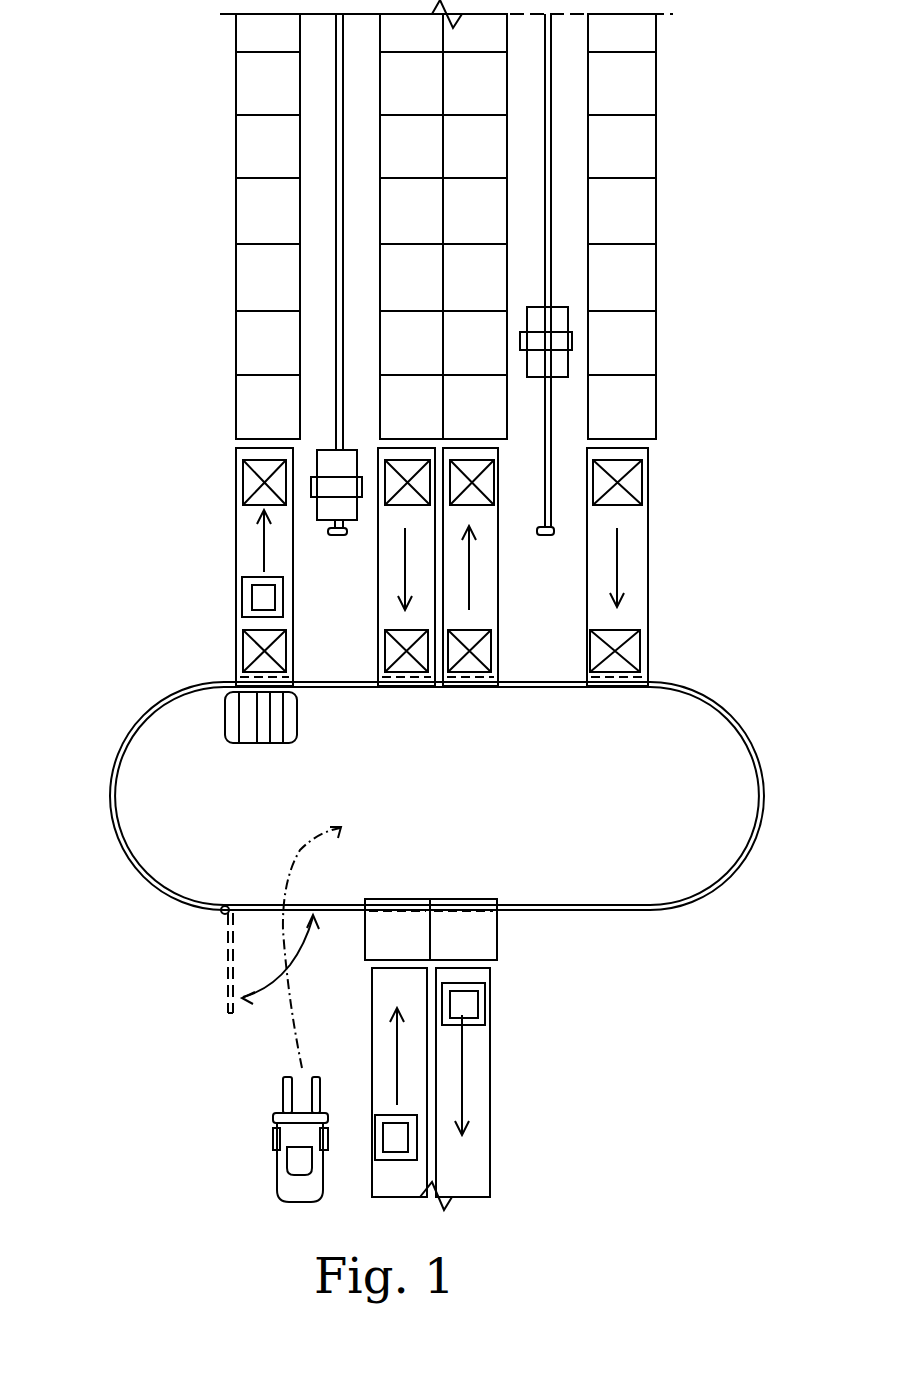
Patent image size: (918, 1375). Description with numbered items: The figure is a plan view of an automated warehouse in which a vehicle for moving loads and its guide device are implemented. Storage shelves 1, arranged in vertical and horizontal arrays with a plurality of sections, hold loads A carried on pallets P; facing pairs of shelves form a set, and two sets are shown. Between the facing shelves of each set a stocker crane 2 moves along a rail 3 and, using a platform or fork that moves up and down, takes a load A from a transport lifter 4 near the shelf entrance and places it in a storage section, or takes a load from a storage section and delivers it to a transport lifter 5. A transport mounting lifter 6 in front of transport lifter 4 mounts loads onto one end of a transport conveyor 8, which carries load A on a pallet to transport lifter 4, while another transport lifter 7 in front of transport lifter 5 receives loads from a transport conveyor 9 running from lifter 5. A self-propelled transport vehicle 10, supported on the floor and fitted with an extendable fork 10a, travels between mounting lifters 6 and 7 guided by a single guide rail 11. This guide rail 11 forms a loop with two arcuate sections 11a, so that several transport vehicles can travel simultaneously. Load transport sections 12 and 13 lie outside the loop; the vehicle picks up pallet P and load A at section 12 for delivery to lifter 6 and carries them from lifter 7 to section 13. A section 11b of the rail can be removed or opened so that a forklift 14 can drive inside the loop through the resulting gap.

The storage shelves 1 is at (362, 197).
The stocker crane 2 is at (322, 448).
The rail 3 is at (334, 345).
The transport lifter 4 is at (243, 483).
The transport lifter 5 is at (399, 460).
The transport mounting lifter 6 is at (243, 650).
The transport lifter 7 is at (385, 650).
The transport conveyor 8 is at (236, 528).
The transport conveyor 9 is at (378, 578).
The self-propelled transport vehicle 10 is at (300, 758).
The fork 10a is at (245, 738).
The single guide rail 11 is at (433, 847).
The arcuate sections 11a is at (109, 800).
The section of guide rail 11b is at (260, 903).
The load transport section 12 is at (400, 898).
The load transport section 13 is at (470, 898).
The forklift 14 is at (277, 1165).
The pallet P is at (255, 578).
The load A is at (255, 600).